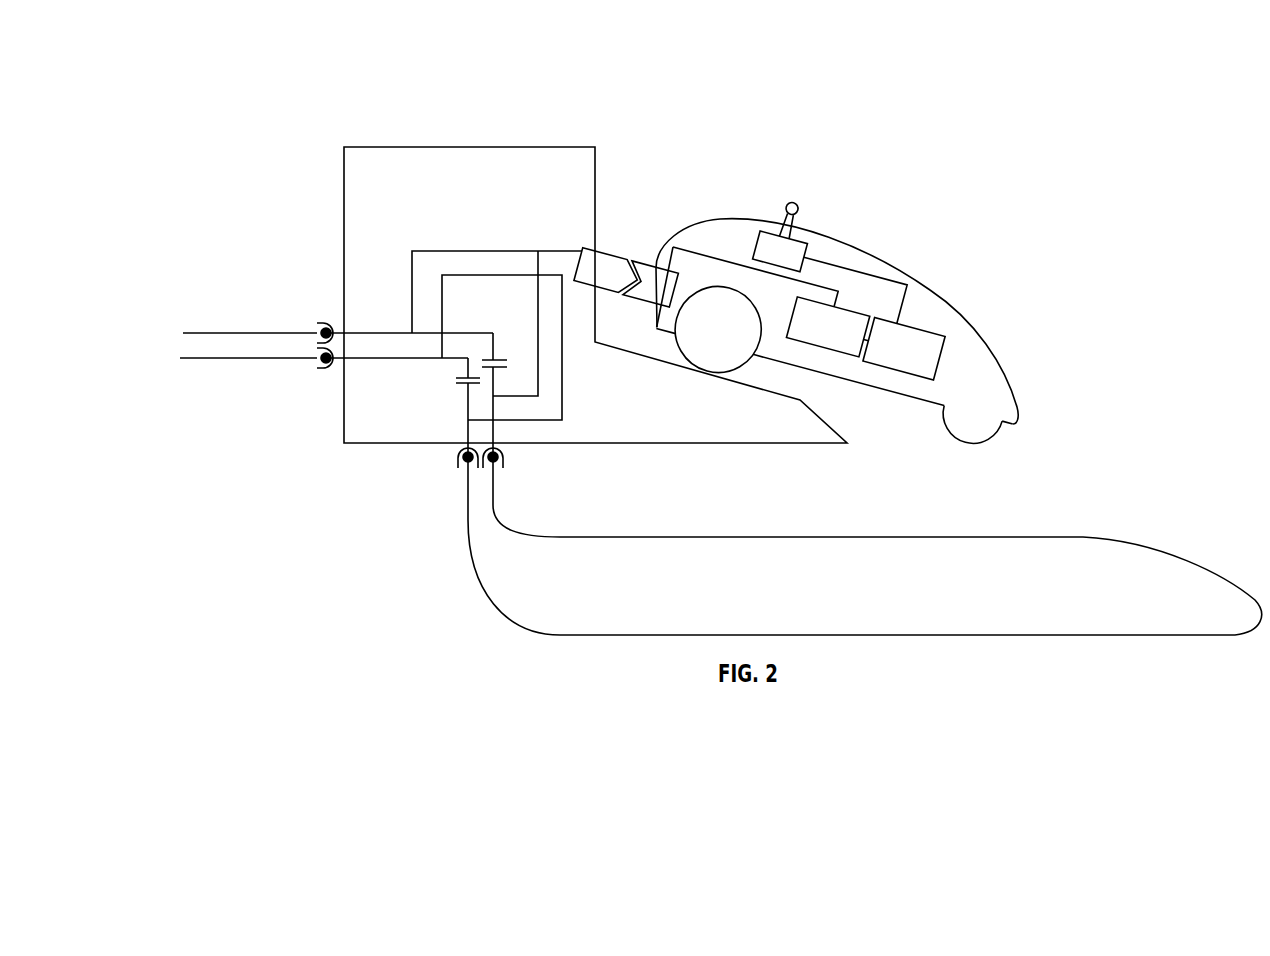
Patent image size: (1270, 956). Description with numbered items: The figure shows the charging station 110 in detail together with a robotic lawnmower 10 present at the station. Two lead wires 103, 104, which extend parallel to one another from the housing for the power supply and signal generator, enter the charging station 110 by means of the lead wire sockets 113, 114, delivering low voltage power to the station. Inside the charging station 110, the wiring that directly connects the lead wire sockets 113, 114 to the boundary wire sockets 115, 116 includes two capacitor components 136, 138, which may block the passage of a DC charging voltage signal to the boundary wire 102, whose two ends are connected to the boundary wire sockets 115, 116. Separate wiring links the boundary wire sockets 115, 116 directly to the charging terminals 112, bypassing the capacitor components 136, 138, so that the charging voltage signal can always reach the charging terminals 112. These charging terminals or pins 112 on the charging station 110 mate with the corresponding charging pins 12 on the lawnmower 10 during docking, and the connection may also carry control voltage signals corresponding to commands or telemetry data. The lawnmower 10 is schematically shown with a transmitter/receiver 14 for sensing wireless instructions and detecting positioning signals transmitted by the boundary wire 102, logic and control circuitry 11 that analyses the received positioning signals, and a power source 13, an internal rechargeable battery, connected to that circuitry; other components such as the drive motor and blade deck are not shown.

The robotic lawnmower 10 is at (960, 310).
The logic and control circuitry 11 is at (904, 349).
The charging pins 12 is at (650, 284).
The power source 13 is at (827, 327).
The transmitter/receiver 14 is at (785, 233).
The boundary wire 102 is at (1046, 537).
The lead wire 103 is at (238, 333).
The lead wire 104 is at (238, 358).
The charging station 110 is at (463, 147).
The charging terminals 112 is at (608, 272).
The lead wire socket 113 is at (322, 323).
The lead wire socket 114 is at (322, 370).
The boundary wire socket 115 is at (456, 461).
The boundary wire socket 116 is at (504, 461).
The capacitor component 136 is at (455, 378).
The capacitor component 138 is at (498, 358).